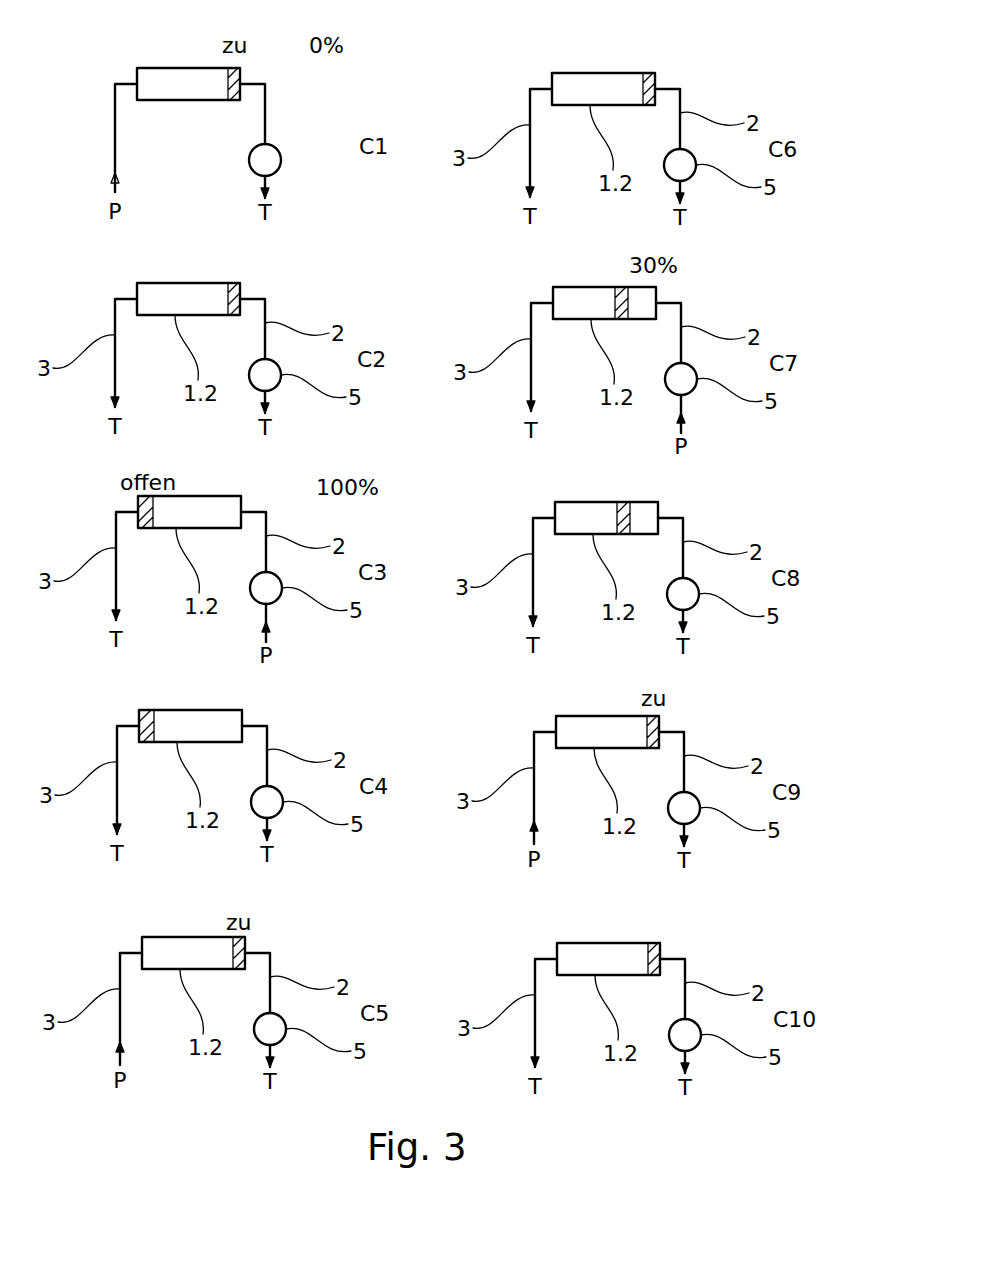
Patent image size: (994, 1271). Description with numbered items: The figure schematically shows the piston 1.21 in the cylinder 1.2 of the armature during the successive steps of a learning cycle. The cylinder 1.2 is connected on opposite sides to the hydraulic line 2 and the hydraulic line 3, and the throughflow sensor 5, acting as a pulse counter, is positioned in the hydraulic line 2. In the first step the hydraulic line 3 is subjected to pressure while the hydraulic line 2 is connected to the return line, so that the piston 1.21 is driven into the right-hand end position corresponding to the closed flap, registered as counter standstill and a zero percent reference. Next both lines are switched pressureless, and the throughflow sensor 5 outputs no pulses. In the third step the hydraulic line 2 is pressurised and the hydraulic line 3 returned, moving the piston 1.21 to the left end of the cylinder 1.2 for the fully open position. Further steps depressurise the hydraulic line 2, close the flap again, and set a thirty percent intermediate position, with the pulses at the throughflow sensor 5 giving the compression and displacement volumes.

The hydraulic line 2 is at (292, 114).
The hydraulic line 3 is at (87, 138).
The throughflow sensor 5 is at (305, 169).
The cylinder 1.2 is at (188, 129).
The piston 1.21 is at (202, 52).